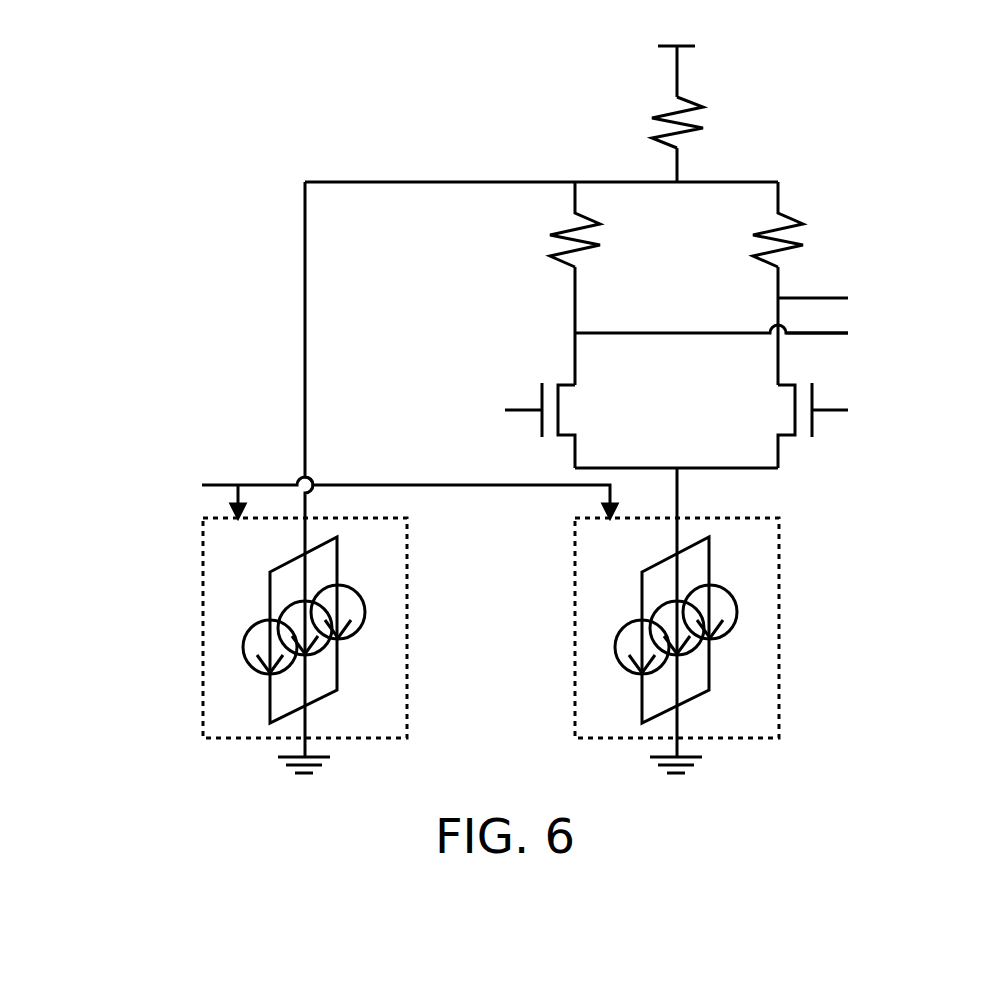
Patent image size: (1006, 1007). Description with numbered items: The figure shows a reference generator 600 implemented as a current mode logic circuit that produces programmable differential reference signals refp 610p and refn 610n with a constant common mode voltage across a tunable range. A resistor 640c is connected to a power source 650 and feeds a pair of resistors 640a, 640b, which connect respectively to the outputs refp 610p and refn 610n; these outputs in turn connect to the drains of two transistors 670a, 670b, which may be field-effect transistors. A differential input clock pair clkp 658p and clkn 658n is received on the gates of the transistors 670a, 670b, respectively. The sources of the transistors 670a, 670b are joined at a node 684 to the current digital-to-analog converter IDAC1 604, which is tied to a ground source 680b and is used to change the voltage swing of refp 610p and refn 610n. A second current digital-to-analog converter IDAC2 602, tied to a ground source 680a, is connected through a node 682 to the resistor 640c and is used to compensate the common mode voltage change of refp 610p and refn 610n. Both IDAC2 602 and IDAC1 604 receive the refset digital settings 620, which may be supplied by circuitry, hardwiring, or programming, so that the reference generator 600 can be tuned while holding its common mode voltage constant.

The reference generator 600 is at (988, 89).
The current digital-to-analog converter IDAC2 602 is at (395, 716).
The current digital-to-analog converter IDAC1 604 is at (767, 716).
The refp output 610p is at (878, 299).
The refn output 610n is at (882, 333).
The refset[n-1:0] digital settings 620 is at (321, 477).
The resistor 640a is at (533, 224).
The resistor 640b is at (821, 224).
The resistor 640c is at (719, 122).
The power source 650 is at (718, 67).
The clkp clock input 658p is at (454, 410).
The clkn clock input 658n is at (896, 410).
The transistor 670a is at (604, 426).
The transistor 670b is at (749, 426).
The ground source 680a is at (347, 757).
The ground source 680b is at (719, 757).
The connection of IDAC2 to resistor 640c 682 is at (338, 453).
The connection of IDAC1 to transistor sources 684 is at (711, 612).